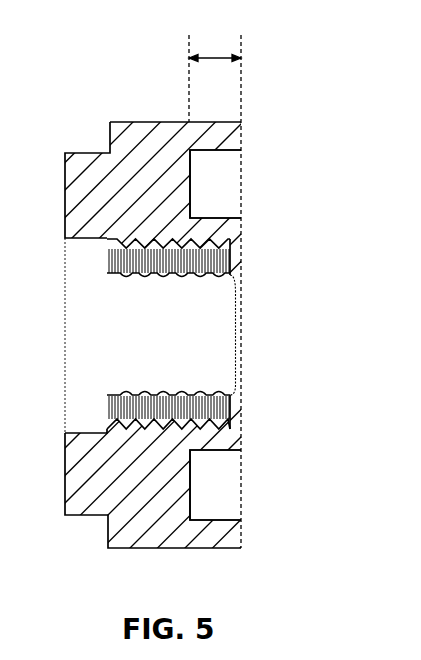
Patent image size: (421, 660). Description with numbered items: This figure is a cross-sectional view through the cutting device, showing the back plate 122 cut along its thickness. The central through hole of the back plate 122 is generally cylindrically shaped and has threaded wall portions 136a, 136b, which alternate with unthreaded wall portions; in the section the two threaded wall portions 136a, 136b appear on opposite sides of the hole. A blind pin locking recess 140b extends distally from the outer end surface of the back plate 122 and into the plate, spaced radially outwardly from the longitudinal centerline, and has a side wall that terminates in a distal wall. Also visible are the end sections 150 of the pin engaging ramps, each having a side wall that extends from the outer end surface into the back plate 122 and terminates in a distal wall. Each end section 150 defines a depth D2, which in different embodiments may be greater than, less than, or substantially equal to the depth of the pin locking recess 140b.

The back plate 122 is at (108, 549).
The threaded wall portion 136a is at (225, 407).
The threaded wall portion 136b is at (225, 258).
The pin locking recess 140b is at (205, 330).
The end section 150 is at (230, 172).
The depth D2 is at (215, 55).